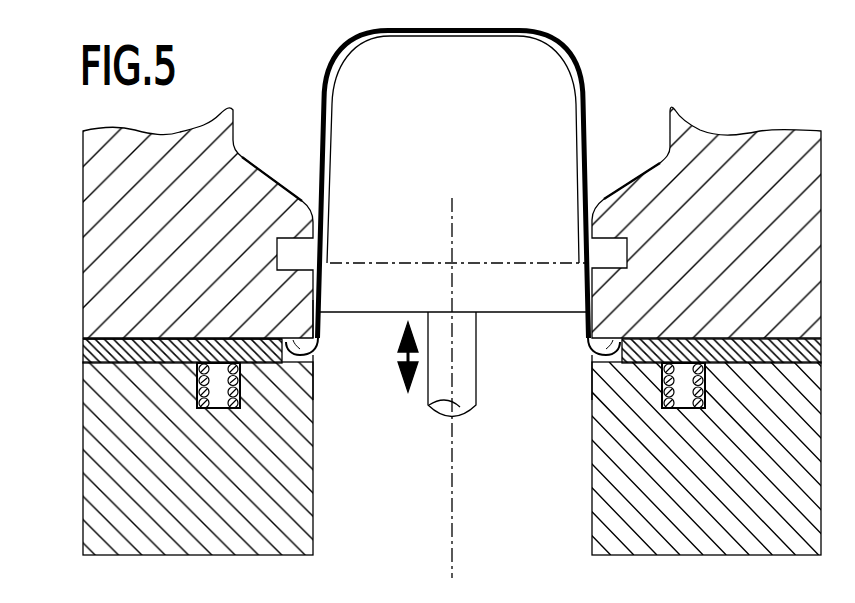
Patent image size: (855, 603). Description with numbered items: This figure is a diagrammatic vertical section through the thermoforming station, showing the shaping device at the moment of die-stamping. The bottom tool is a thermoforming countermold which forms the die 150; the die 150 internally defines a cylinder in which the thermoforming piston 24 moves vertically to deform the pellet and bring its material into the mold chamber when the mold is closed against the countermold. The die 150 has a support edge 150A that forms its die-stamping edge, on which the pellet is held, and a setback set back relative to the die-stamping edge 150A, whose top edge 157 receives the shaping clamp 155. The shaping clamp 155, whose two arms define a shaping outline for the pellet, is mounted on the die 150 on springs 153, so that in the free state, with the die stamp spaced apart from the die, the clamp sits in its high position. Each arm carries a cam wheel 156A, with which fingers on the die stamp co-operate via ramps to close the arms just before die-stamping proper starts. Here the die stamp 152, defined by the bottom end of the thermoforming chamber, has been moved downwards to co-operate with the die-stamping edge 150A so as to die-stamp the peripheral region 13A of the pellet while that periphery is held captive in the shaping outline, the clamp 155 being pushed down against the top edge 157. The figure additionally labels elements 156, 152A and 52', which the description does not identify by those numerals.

The die stamp 152 is at (107, 253).
The upper right mold block 156 is at (628, 147).
The die 150 is at (107, 456).
The top edge 157 is at (107, 352).
The shaping clamp 155 is at (120, 340).
The springs 153 is at (240, 390).
The cam wheel 156A is at (319, 237).
The thermoforming piston 24 is at (530, 280).
The support edge 150A is at (313, 390).
The edge of upper block 152A is at (297, 347).
The seal lip 52' is at (569, 340).
The peripheral region 13A is at (597, 378).